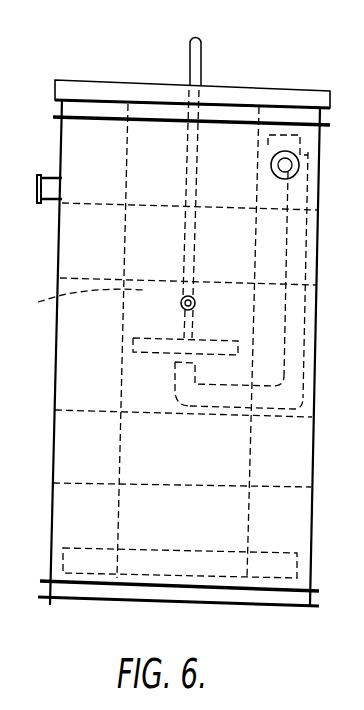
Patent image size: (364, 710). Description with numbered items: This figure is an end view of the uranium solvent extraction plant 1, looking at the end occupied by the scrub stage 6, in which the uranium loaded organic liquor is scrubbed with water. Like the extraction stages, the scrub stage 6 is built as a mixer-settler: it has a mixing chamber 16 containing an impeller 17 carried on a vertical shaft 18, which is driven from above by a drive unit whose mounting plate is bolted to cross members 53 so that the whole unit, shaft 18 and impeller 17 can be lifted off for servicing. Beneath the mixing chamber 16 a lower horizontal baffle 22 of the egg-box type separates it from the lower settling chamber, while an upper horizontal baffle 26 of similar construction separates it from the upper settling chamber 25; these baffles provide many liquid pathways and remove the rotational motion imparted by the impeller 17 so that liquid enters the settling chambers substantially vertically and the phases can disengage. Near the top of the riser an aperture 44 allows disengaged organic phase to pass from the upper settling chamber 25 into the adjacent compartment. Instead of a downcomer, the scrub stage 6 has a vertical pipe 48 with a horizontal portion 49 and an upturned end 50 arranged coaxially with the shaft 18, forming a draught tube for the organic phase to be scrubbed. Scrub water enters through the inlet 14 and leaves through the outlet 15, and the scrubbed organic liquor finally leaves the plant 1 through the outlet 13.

The uranium solvent extraction plant 1 is at (169, 353).
The scrub stage 6 is at (58, 260).
The outlet 13 is at (271, 172).
The inlet 14 is at (195, 304).
The outlet 15 is at (53, 183).
The mixing chamber 16 is at (167, 305).
The impeller 17 is at (158, 342).
The vertical shaft 18 is at (198, 60).
The lower horizontal baffle 22 is at (137, 455).
The upper settling chamber 25 is at (168, 135).
The upper horizontal baffle 26 is at (140, 231).
The aperture 44 is at (268, 142).
The vertical pipe 48 is at (285, 320).
The horizontal portion 49 is at (262, 404).
The upturned end 50 is at (174, 372).
The cross members 53 is at (285, 97).